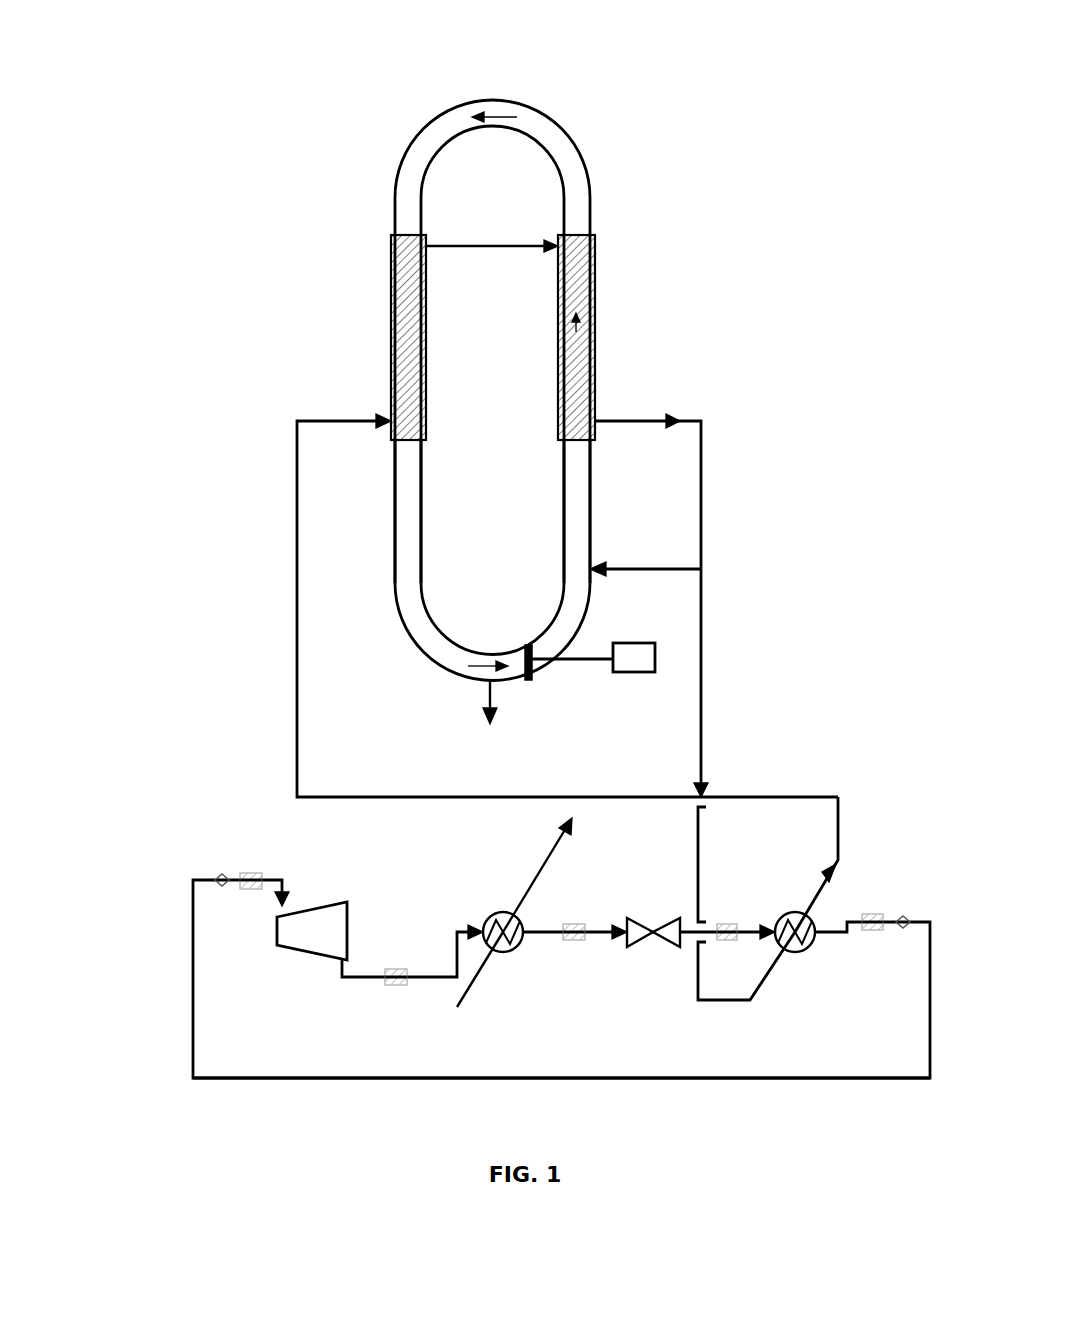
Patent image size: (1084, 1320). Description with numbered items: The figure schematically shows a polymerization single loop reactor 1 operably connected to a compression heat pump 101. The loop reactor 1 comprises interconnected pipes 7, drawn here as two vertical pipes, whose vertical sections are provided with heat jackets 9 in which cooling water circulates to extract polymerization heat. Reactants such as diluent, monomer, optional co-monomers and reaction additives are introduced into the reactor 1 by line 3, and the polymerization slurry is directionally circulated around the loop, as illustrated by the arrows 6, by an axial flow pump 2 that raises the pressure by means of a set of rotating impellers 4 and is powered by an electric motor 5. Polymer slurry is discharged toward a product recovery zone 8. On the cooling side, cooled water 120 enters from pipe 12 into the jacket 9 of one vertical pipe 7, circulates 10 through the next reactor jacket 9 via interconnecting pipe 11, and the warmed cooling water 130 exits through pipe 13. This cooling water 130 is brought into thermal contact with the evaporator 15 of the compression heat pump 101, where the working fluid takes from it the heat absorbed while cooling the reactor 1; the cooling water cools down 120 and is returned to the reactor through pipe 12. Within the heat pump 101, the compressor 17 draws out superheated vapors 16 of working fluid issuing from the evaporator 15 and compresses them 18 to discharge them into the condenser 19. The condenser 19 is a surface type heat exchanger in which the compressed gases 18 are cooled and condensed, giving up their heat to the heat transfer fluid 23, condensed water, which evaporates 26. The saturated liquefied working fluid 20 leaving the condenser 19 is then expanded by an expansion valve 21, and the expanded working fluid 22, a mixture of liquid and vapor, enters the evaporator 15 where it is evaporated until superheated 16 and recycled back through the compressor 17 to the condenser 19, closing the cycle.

The single loop reactor 1 is at (588, 100).
The axial flow pump 2 is at (588, 662).
The line 3 is at (645, 568).
The rotating impellers 4 is at (528, 681).
The electric motor 5 is at (640, 656).
The arrows 6 is at (487, 107).
The interconnected pipes 7 is at (401, 490).
The product recovery zone 8 is at (489, 698).
The heat jackets 9 is at (391, 291).
The circulation of cooling water 10 is at (577, 335).
The interconnecting pipe 11 is at (467, 246).
The pipe 12 is at (350, 421).
The pipe 13 is at (612, 421).
The evaporator 15 is at (805, 950).
The superheated vapors of working fluid 16 is at (200, 880).
The compressor 17 is at (312, 920).
The compressed gases 18 is at (413, 977).
The condenser 19 is at (497, 917).
The working fluid 20 is at (555, 915).
The expansion valve 21 is at (645, 922).
The expanded working fluid 22 is at (745, 922).
The heat transfer fluid 23 is at (465, 1005).
The evaporated heat transfer fluid 26 is at (545, 870).
The compression heat pump 101 is at (240, 1013).
The cooled water 120 is at (840, 832).
The cooling water 130 is at (757, 1000).